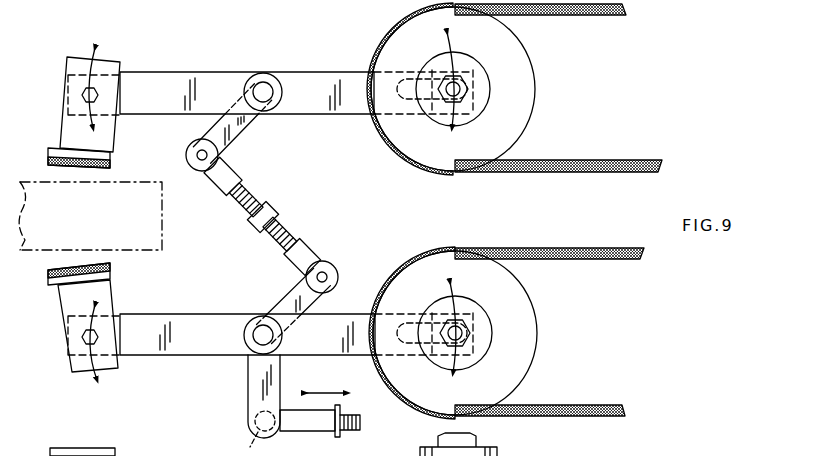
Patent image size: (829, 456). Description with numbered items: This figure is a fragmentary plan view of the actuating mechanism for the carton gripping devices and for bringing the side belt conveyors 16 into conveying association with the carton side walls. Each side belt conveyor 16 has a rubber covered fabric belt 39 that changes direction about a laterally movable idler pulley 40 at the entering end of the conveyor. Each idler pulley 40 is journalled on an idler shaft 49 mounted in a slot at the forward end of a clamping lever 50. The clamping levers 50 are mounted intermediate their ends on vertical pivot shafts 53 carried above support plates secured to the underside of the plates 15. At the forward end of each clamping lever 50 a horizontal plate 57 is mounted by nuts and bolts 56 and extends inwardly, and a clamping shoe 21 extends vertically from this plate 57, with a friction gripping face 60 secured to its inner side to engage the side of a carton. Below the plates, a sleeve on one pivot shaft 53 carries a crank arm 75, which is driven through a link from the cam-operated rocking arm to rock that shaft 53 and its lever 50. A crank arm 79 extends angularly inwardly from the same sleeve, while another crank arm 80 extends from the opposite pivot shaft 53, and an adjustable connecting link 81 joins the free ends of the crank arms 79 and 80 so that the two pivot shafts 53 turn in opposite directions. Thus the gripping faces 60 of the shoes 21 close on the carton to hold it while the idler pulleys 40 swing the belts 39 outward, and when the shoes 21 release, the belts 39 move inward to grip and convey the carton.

The plate 15 is at (753, 448).
The side belt conveyor 16 is at (590, 18).
The clamping shoe 21 is at (116, 141).
The belt 39 is at (602, 173).
The idler pulley 40 is at (510, 127).
The idler shaft 49 is at (461, 88).
The clamping lever 50 is at (200, 72).
The vertical pivot shaft 53 is at (264, 92).
The nuts and bolts 56 is at (98, 90).
The horizontal plate 57 is at (60, 125).
The friction gripping face 60 is at (67, 168).
The crank arm 75 is at (248, 407).
The crank arm 79 is at (318, 302).
The crank arm 80 is at (242, 133).
The adjustable connecting link 81 is at (254, 223).